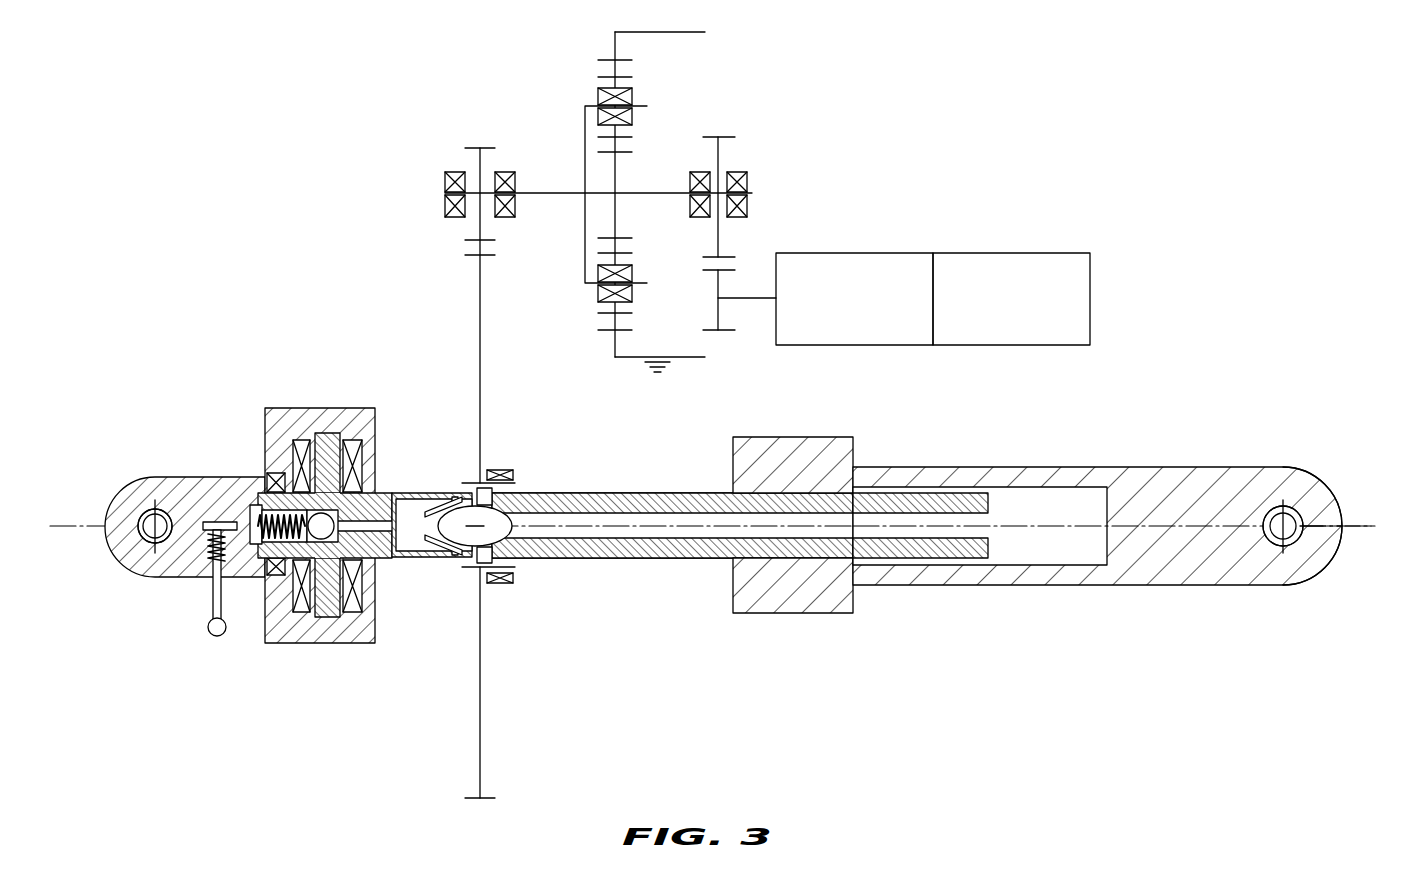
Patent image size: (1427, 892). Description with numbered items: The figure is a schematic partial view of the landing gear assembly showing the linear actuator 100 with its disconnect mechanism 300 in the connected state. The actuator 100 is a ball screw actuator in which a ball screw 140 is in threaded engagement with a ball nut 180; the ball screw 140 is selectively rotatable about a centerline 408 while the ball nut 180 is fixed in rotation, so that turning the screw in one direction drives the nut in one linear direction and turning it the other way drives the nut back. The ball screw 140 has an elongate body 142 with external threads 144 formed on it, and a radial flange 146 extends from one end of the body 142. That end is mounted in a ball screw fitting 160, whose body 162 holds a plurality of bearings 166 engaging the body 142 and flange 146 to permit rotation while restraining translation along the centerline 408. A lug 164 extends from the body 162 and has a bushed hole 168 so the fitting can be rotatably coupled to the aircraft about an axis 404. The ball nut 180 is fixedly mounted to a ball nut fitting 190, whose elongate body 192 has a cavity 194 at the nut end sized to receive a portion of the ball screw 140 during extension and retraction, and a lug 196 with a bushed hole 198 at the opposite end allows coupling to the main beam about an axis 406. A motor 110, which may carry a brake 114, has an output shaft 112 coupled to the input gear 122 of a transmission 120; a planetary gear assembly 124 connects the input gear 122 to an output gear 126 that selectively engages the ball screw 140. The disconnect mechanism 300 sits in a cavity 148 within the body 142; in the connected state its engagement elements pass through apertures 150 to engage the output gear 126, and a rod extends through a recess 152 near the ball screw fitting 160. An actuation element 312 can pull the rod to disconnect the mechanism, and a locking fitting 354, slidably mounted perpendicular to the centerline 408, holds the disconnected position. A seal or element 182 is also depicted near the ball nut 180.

The linear actuator 100 is at (715, 638).
The motor 110 is at (958, 257).
The output shaft 112 is at (740, 297).
The brake 114 is at (1092, 296).
The transmission 120 is at (584, 413).
The input gear 122 is at (726, 332).
The planetary gear assembly 124 is at (590, 78).
The output gear 126 is at (480, 352).
The ball screw 140 is at (600, 543).
The elongate body 142 is at (678, 560).
The external threads 144 is at (740, 531).
The radial flange 146 is at (327, 438).
The cavity 148 is at (410, 547).
The aperture 150 is at (493, 490).
The recess 152 is at (272, 542).
The ball screw fitting 160 is at (285, 528).
The body 162 is at (300, 408).
The lug 164 is at (160, 504).
The bearings 166 is at (280, 580).
The bushed hole 168 is at (140, 550).
The ball nut 180 is at (800, 437).
The seal 182 is at (830, 497).
The ball nut fitting 190 is at (1124, 519).
The elongate body 192 is at (1150, 585).
The cavity 194 is at (1035, 508).
The lug 196 is at (1338, 490).
The bushed hole 198 is at (1272, 548).
The disconnect mechanism 300 is at (436, 504).
The actuation element 312 is at (160, 601).
The locking fitting 354 is at (208, 634).
The axis 404 is at (147, 512).
The axis 406 is at (1312, 548).
The centerline 408 is at (1353, 528).